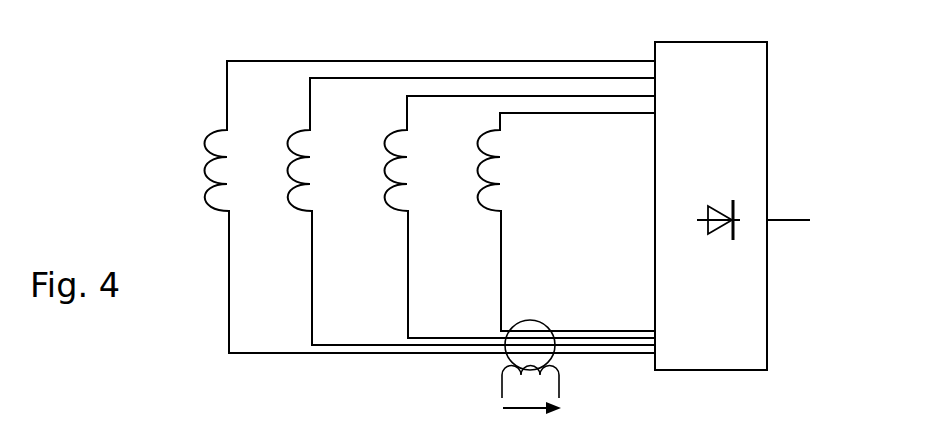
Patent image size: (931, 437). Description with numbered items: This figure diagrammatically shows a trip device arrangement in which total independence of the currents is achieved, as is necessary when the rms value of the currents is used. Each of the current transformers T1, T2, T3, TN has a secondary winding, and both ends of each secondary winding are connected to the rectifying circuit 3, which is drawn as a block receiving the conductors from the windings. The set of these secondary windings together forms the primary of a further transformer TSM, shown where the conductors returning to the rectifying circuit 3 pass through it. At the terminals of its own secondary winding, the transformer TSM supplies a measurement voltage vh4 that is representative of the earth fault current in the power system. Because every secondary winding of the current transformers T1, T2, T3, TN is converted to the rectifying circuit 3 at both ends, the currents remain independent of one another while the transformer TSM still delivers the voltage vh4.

The rectifying circuit 3 is at (767, 84).
The current transformer TN is at (204, 183).
The current transformer T1 is at (287, 184).
The current transformer T2 is at (382, 183).
The current transformer T3 is at (477, 184).
The transformer TSM is at (543, 329).
The measurement voltage vh4 is at (558, 396).